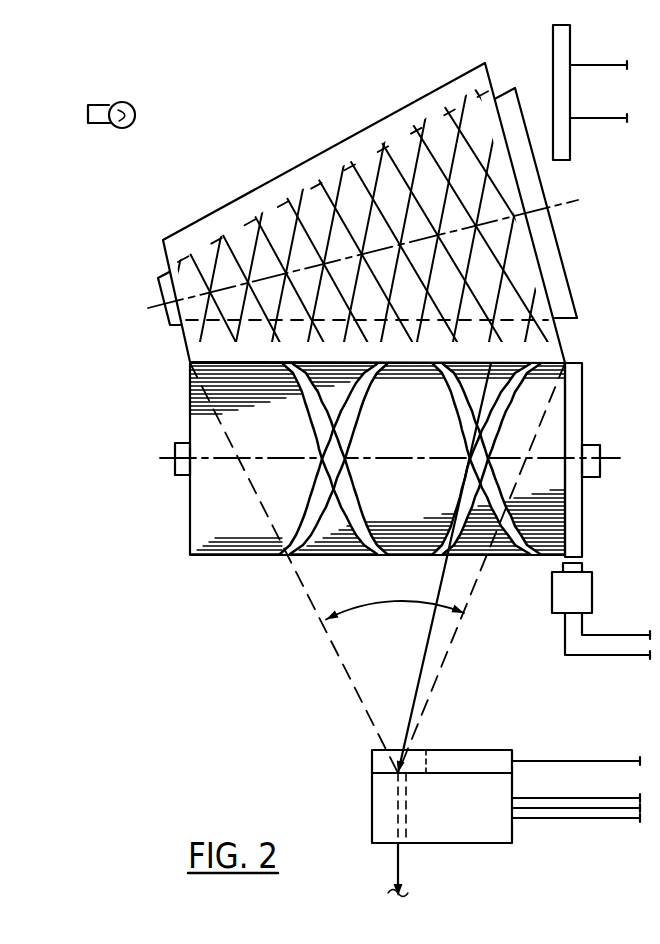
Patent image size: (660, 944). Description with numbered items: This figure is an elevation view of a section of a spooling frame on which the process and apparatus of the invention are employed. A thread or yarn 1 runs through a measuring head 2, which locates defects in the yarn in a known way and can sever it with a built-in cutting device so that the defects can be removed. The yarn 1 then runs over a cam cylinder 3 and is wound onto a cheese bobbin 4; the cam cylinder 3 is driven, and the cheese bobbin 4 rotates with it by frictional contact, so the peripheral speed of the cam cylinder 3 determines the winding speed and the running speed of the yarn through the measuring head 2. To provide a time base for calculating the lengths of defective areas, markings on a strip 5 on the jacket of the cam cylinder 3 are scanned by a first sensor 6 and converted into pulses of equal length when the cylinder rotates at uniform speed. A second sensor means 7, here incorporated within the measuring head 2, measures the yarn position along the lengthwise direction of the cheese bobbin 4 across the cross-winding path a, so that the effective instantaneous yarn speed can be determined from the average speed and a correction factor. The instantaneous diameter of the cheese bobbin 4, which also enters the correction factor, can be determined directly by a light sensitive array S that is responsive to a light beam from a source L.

The yarn 1 is at (422, 668).
The measuring head 2 is at (372, 801).
The cam cylinder 3 is at (188, 421).
The cheese bobbin 4 is at (298, 166).
The strip 5 is at (583, 403).
The first sensor 6 is at (592, 588).
The second sensor means 7 is at (470, 750).
The light source L is at (113, 101).
The light sensitive array S is at (570, 135).
The cross-winding path a is at (395, 599).